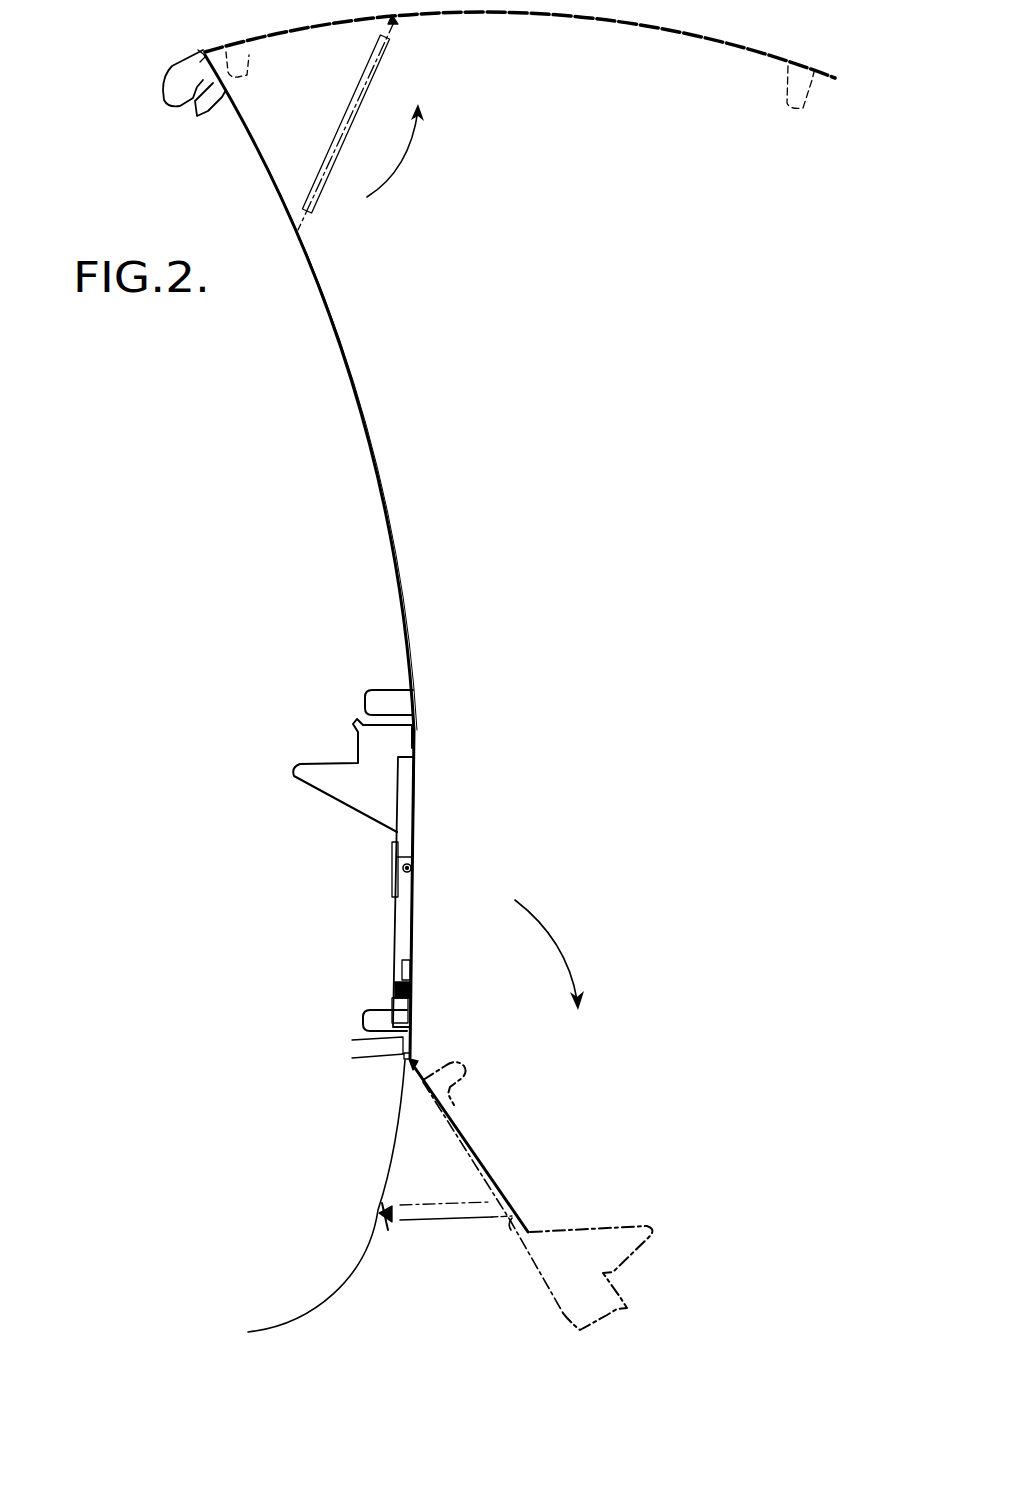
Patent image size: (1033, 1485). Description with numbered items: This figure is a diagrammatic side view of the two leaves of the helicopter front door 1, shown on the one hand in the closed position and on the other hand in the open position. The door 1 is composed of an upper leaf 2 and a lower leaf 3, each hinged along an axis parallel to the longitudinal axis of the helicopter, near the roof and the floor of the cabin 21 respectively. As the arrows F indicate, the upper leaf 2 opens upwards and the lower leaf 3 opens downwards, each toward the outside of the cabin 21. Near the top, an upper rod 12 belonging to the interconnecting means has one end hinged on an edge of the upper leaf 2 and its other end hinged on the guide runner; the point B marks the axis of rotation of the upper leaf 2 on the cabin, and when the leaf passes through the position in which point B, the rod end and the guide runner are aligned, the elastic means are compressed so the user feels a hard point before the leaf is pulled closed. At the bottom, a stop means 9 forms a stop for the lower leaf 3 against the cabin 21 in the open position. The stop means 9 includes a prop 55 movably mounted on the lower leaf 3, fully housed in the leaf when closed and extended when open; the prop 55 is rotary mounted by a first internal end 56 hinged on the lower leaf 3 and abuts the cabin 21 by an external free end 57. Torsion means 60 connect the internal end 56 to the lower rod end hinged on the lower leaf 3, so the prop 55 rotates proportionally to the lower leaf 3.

The front door 1 is at (250, 514).
The upper leaf 2 is at (588, 27).
The lower leaf 3 is at (410, 827).
The stop means 9 is at (419, 1226).
The upper rod 12 is at (377, 78).
The cabin 21 is at (302, 1307).
The prop 55 is at (445, 1215).
The first internal end 56 is at (512, 1220).
The external free end 57 is at (380, 1212).
The torsion means 60 is at (342, 790).
The point of the axis of rotation of the upper leaf B is at (205, 63).
The arrows F is at (475, 557).